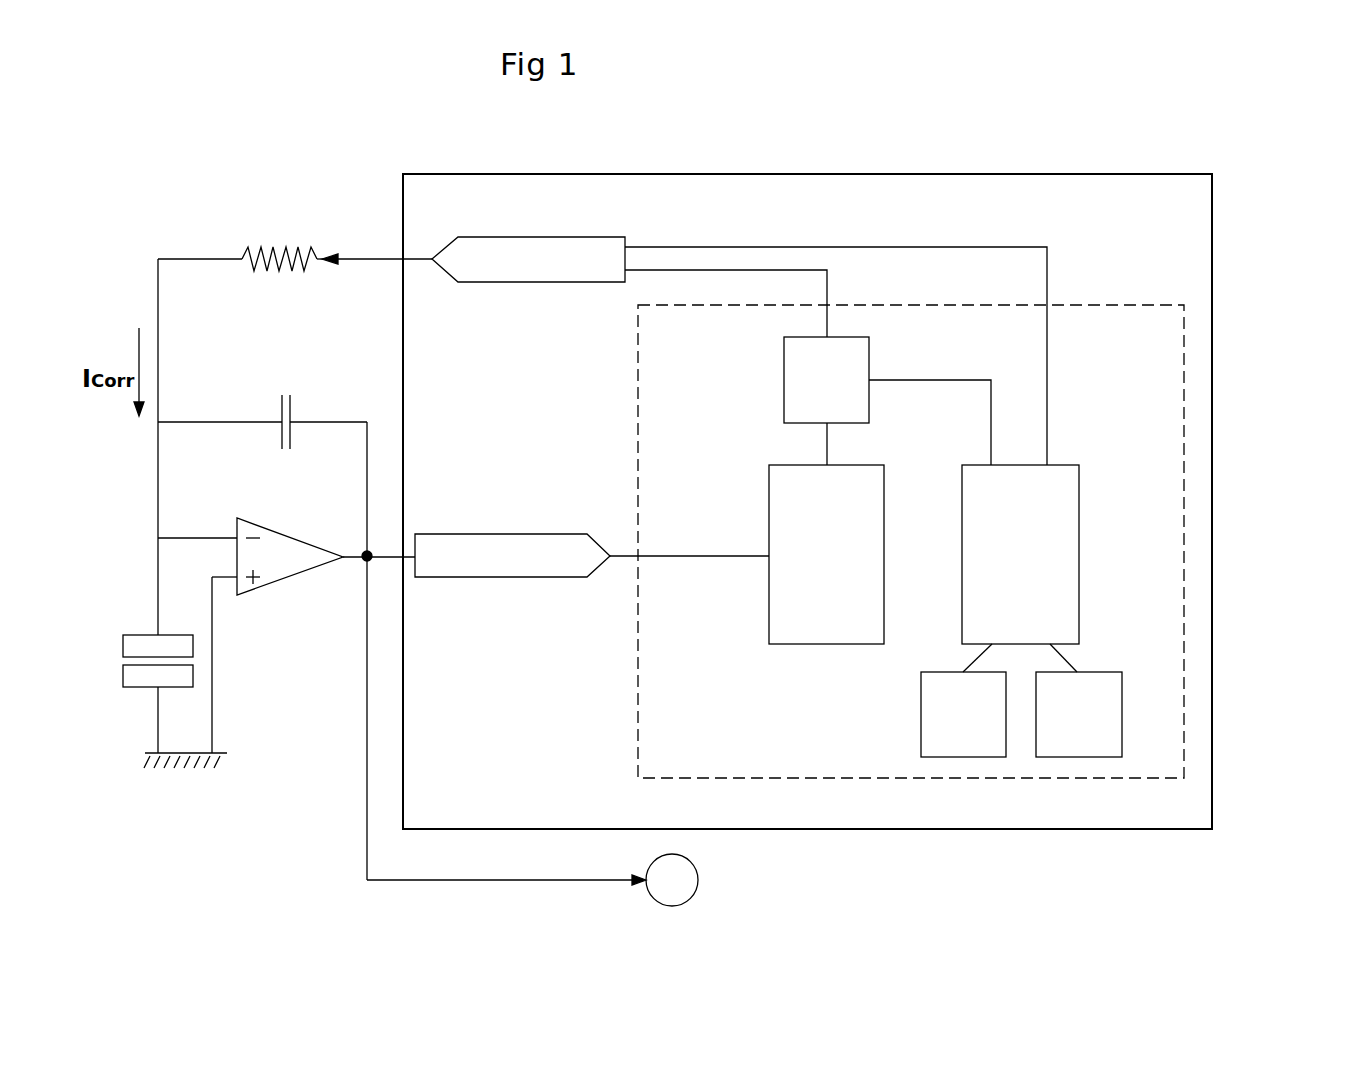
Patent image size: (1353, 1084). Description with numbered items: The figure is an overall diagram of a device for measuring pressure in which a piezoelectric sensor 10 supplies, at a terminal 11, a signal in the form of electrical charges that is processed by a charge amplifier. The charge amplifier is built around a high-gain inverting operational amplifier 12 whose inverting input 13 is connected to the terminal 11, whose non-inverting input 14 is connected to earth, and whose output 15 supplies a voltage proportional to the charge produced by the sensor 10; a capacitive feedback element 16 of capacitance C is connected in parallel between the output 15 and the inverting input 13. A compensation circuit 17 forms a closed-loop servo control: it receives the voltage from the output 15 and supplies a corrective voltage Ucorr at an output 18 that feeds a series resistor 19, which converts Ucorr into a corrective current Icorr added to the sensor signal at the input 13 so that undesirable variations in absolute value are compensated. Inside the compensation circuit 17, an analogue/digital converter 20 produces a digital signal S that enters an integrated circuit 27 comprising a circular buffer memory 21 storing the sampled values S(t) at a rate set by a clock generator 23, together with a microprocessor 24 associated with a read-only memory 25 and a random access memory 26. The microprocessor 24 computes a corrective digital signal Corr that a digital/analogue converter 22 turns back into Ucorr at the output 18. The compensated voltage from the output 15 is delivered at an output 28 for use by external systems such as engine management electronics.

The piezoelectric sensor 10 is at (125, 706).
The terminal 11 is at (158, 592).
The operational amplifier 12 is at (285, 560).
The inverting input 13 is at (237, 532).
The non-inverting input 14 is at (237, 583).
The output 15 is at (360, 560).
The capacitive feedback element 16 is at (295, 368).
The compensation circuit 17 is at (823, 173).
The output 18 is at (361, 259).
The series resistor 19 is at (283, 247).
The analogue/digital converter 20 is at (515, 534).
The circular buffer memory 21 is at (790, 495).
The digital/analogue converter 22 is at (530, 237).
The clock generator 23 is at (797, 383).
The microprocessor 24 is at (1045, 497).
The read-only memory 25 is at (968, 740).
The random access memory 26 is at (1083, 740).
The integrated circuit 27 is at (1184, 645).
The output 28 is at (685, 888).